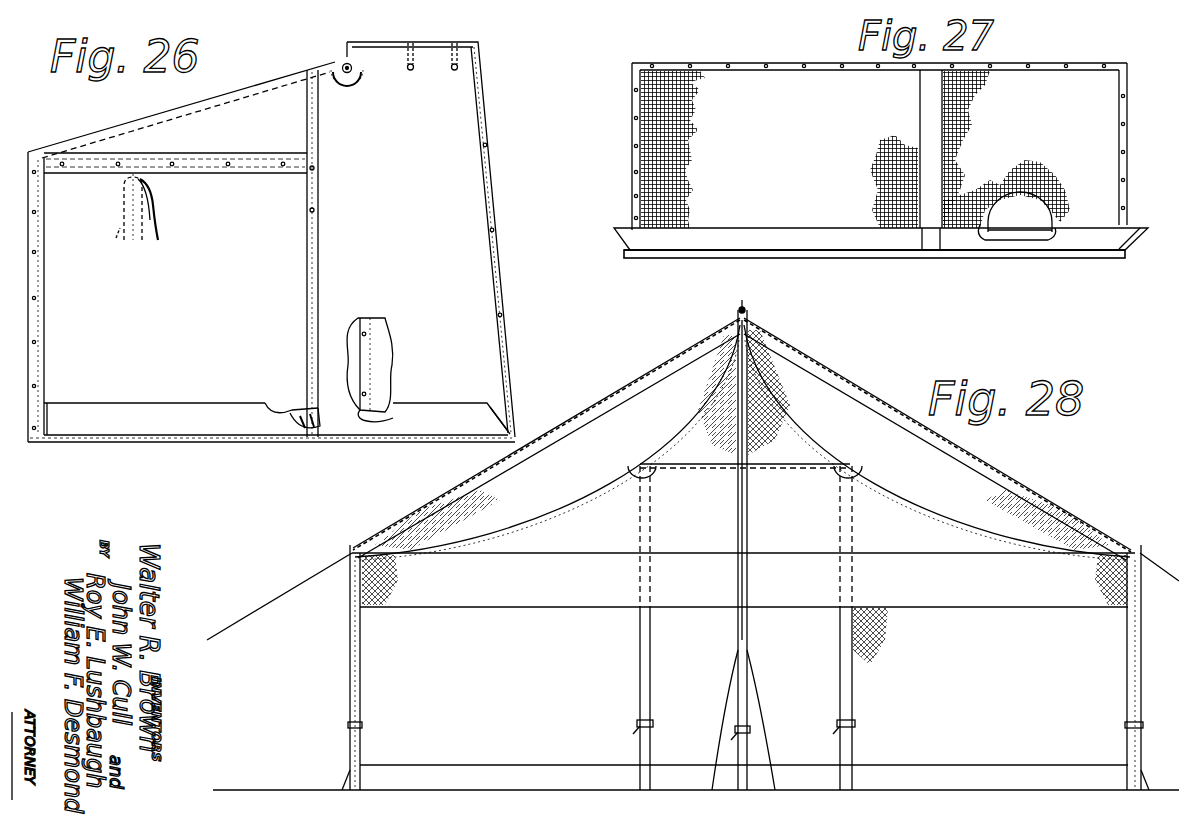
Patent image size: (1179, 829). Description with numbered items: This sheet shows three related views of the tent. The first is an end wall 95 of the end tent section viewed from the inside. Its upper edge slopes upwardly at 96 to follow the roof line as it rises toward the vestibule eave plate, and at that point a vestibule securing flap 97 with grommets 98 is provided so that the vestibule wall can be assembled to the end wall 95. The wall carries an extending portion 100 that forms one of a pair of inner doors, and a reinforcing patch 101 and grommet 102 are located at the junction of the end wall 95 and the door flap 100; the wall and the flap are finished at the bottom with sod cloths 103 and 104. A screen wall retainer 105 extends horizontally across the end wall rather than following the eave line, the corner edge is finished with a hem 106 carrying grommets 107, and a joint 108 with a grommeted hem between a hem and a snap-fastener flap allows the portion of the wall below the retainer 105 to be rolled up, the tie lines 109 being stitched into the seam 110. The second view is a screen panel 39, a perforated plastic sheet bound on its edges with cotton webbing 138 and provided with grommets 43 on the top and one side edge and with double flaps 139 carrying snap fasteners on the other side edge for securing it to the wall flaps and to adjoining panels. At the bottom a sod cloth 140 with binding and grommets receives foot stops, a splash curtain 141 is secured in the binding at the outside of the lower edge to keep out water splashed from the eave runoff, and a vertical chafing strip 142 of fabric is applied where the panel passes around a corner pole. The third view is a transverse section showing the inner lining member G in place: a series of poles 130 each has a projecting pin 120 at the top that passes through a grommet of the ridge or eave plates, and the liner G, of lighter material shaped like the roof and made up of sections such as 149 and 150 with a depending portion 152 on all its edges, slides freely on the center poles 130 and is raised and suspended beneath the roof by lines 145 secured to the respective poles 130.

In FIG. 27, the screen panel 39 is at (855, 149).
In FIG. 27, the grommets 43 is at (800, 68).
In FIG. 26, the end wall 95 is at (182, 362).
In FIG. 26, the sloping upper edge 96 is at (160, 120).
In FIG. 26, the vestibule securing flap 97 is at (368, 372).
In FIG. 26, the grommets 98 is at (366, 334).
In FIG. 26, the door flap 100 is at (431, 239).
In FIG. 26, the reinforcing patch 101 is at (362, 80).
In FIG. 26, the grommet 102 is at (345, 80).
In FIG. 26, the sod cloth 103 is at (157, 442).
In FIG. 26, the sod cloth 104 is at (437, 443).
In FIG. 26, the screen wall retainer 105 is at (225, 165).
In FIG. 26, the hem 106 is at (36, 272).
In FIG. 26, the grommets 107 is at (36, 298).
In FIG. 26, the joint 108 is at (305, 290).
In FIG. 26, the tie lines 109 is at (158, 222).
In FIG. 26, the seam 110 is at (124, 210).
In FIG. 28, the projecting pin 120 is at (748, 308).
In FIG. 28, the poles 130 is at (749, 538).
In FIG. 27, the cotton webbing 138 is at (1022, 66).
In FIG. 27, the double flaps 139 is at (1128, 148).
In FIG. 27, the sod cloth 140 is at (784, 229).
In FIG. 27, the splash curtain 141 is at (1024, 240).
In FIG. 27, the chafing strip 142 is at (943, 161).
In FIG. 28, the lines 145 is at (362, 650).
In FIG. 28, the liner section 149 is at (710, 535).
In FIG. 28, the liner section 150 is at (742, 439).
In FIG. 28, the depending portion 152 is at (548, 598).
In FIG. 28, the inner lining member G is at (635, 422).